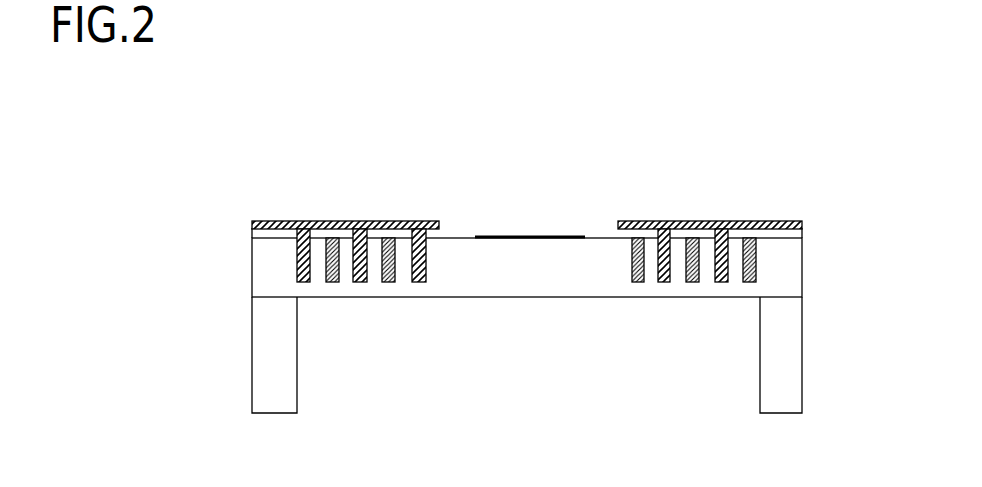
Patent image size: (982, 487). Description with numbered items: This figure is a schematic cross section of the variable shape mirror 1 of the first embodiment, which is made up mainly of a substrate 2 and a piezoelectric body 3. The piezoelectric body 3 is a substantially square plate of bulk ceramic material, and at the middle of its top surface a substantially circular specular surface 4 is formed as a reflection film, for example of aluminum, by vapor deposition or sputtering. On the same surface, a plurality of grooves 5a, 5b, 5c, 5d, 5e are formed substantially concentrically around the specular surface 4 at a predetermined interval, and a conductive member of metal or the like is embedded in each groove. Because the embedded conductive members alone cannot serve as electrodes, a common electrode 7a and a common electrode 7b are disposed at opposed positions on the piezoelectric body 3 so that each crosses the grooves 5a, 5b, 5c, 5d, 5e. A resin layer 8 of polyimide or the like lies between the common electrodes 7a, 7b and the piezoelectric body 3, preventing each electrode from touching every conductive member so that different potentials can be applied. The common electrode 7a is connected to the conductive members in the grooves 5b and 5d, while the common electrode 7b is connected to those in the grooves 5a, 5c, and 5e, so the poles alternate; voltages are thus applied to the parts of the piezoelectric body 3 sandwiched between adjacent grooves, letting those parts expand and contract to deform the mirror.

The variable shape mirror 1 is at (832, 192).
The substrate 2 is at (273, 385).
The piezoelectric body 3 is at (790, 270).
The specular surface 4 is at (530, 237).
The groove 5a is at (419, 283).
The groove 5b is at (388, 283).
The groove 5c is at (360, 283).
The groove 5d is at (333, 283).
The groove 5e is at (303, 283).
The common electrode 7a is at (700, 221).
The common electrode 7b is at (325, 221).
The resin layer 8 is at (272, 235).